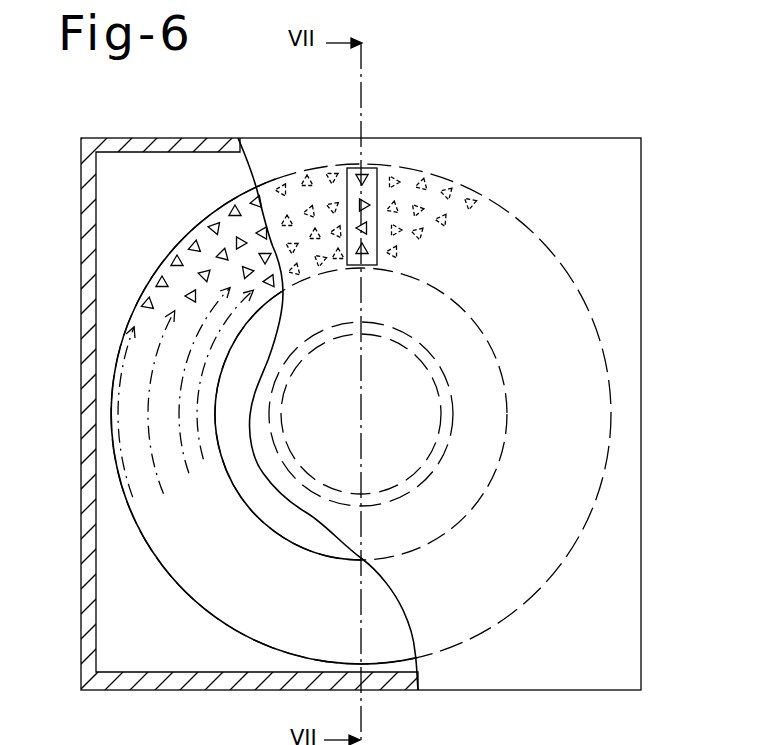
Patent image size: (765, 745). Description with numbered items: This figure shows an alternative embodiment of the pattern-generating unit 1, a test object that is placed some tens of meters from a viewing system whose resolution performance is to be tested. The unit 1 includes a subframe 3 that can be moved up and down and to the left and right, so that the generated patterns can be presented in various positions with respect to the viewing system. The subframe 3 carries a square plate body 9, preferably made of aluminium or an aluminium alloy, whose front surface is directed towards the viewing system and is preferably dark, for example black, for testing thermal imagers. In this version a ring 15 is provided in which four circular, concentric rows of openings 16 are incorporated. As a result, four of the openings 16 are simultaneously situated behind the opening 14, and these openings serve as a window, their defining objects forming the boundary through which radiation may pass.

The pattern-generating unit 1 is at (528, 120).
The subframe 3 is at (614, 565).
The plate body 9 is at (89, 590).
The opening 14 is at (362, 181).
The ring 15 is at (231, 609).
The opening 16 is at (204, 228).